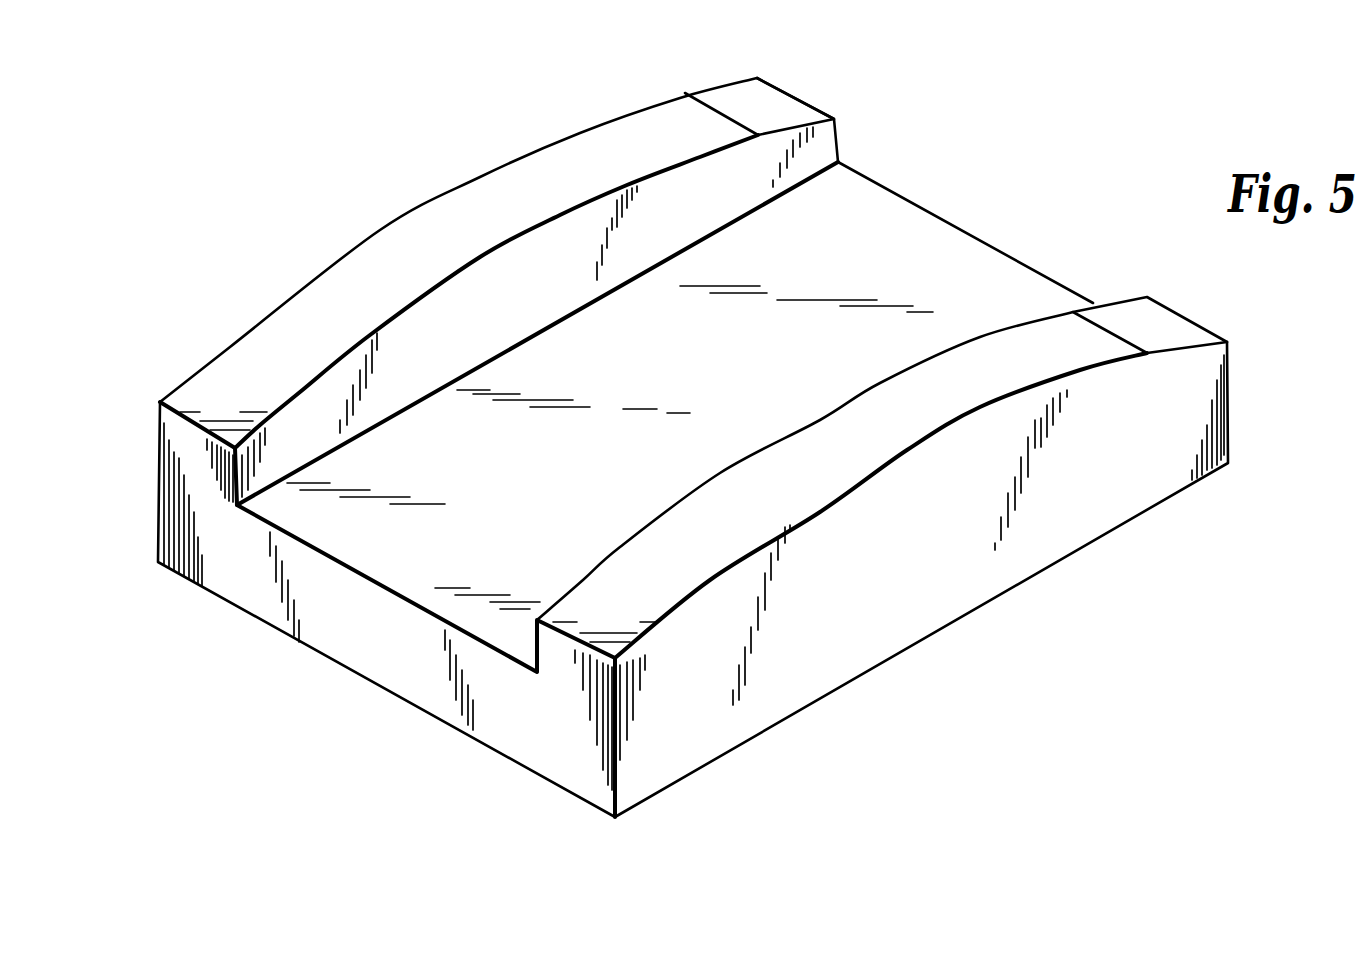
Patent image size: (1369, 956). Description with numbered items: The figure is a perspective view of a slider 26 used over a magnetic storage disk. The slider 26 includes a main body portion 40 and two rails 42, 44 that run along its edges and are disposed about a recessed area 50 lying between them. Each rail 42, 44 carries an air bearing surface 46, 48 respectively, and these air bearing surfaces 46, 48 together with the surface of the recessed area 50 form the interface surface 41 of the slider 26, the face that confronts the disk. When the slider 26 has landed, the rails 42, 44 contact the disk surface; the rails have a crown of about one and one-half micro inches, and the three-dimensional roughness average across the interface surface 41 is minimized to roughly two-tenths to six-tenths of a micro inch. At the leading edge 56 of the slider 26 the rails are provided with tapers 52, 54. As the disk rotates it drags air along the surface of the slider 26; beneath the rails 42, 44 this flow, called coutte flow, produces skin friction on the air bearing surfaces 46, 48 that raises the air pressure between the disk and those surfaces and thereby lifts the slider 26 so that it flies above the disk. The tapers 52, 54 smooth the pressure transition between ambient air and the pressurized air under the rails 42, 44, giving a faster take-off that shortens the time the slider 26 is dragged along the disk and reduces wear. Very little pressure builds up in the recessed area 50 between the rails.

The slider 26 is at (192, 195).
The main body portion 40 is at (385, 691).
The interface surface 41 is at (836, 110).
The rail 42 is at (392, 212).
The rail 44 is at (618, 517).
The air bearing surface 46 is at (523, 170).
The air bearing surface 48 is at (813, 413).
The recessed area 50 is at (395, 555).
The taper 52 is at (732, 93).
The taper 54 is at (1155, 320).
The leading edge 56 is at (895, 190).